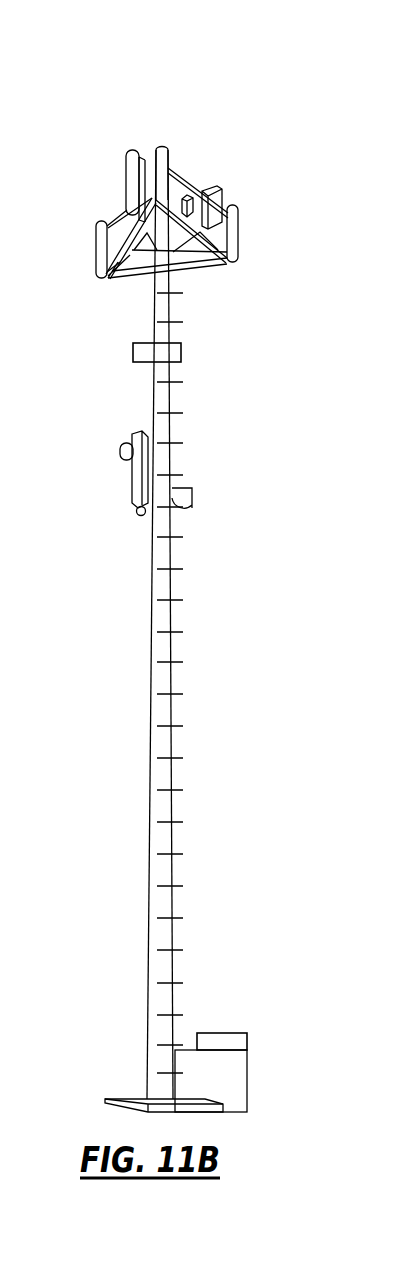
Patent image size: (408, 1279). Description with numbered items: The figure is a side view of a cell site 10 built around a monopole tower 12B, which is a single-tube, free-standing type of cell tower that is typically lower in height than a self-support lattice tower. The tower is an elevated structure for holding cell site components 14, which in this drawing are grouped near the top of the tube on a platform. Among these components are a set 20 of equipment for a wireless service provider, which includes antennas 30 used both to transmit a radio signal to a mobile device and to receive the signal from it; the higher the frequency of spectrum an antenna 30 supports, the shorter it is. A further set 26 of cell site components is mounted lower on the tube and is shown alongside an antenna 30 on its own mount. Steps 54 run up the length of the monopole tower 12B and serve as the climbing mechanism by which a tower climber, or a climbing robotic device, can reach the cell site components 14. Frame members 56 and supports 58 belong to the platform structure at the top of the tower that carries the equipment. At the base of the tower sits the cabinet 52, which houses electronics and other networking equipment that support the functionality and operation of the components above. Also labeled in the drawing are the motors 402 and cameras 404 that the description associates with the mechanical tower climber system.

The cell site 10 is at (151, 61).
The monopole tower 12B is at (165, 806).
The cell site components 14 is at (268, 205).
The set of cell site components 20 is at (150, 166).
The antenna 30 is at (165, 160).
The steps 54 is at (124, 200).
The frame member 56 is at (183, 181).
The platform support 58 is at (112, 276).
The motors 402 is at (183, 346).
The set of cell site components 26 is at (133, 478).
The cabinet 52 is at (248, 1063).
The cameras 404 is at (228, 1033).